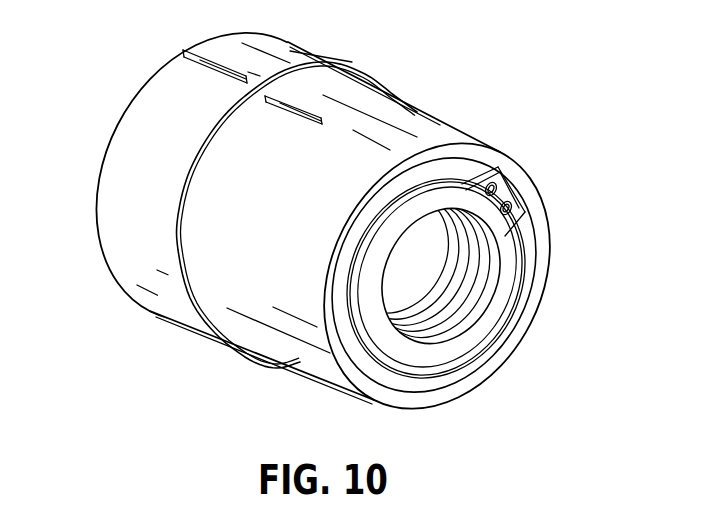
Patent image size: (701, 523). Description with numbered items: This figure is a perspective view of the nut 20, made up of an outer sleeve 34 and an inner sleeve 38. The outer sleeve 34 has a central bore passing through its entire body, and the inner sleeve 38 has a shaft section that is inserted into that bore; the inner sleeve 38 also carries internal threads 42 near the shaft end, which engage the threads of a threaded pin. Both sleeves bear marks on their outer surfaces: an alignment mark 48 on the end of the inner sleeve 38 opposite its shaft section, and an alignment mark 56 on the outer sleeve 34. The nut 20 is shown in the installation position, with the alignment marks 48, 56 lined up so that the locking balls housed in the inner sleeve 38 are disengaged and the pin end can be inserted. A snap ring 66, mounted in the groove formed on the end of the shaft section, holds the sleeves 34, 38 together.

The nut 20 is at (330, 224).
The outer sleeve 34 is at (433, 130).
The inner sleeve 38 is at (118, 178).
The internal threads 42 is at (450, 300).
The alignment mark 48 is at (217, 73).
The alignment mark 56 is at (293, 118).
The snap ring 66 is at (513, 213).